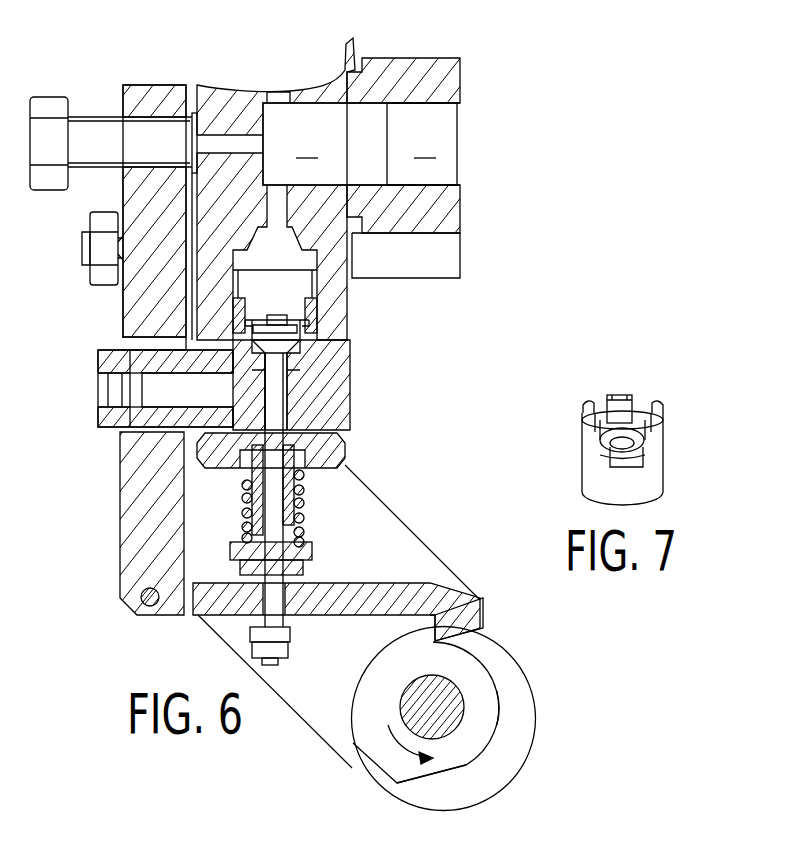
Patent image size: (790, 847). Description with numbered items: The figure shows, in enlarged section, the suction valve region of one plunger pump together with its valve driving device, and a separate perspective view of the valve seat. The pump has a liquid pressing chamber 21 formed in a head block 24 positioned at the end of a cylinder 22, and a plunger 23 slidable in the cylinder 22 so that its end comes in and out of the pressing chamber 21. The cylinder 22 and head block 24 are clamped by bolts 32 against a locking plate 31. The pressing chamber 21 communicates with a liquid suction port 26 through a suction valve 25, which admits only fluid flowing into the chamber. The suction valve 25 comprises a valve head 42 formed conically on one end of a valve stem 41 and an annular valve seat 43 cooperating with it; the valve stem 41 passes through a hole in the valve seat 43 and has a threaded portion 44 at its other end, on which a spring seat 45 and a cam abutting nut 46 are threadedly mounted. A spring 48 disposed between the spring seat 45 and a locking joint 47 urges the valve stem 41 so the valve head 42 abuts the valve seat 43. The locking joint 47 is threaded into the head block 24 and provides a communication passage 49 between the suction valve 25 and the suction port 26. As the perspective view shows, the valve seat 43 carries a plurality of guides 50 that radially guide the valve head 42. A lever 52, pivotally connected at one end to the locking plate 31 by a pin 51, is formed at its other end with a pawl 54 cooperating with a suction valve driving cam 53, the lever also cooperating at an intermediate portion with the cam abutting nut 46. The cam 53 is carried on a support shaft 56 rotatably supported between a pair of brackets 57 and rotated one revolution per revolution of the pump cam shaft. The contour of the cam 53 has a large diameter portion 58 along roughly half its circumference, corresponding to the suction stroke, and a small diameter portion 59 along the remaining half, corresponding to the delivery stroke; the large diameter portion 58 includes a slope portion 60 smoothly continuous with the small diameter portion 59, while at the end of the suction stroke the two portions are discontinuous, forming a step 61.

In FIG. 6, the liquid pressing chamber 21 is at (305, 144).
In FIG. 6, the cylinder 22 is at (420, 58).
In FIG. 6, the plunger 23 is at (422, 144).
In FIG. 6, the head block 24 is at (252, 88).
In FIG. 6, the suction valve 25 is at (296, 316).
In FIG. 6, the liquid suction port 26 is at (98, 400).
In FIG. 6, the locking plate 31 is at (157, 86).
In FIG. 6, the bolt 32 is at (82, 244).
In FIG. 6, the valve stem 41 is at (312, 362).
In FIG. 6, the valve head 42 is at (312, 346).
In FIG. 6, the valve seat 43 is at (310, 333).
In FIG. 7, the valve seat 43 is at (597, 430).
In FIG. 6, the threaded portion 44 is at (267, 622).
In FIG. 6, the spring seat 45 is at (312, 550).
In FIG. 6, the cam abutting nut 46 is at (303, 568).
In FIG. 6, the locking joint 47 is at (347, 447).
In FIG. 6, the spring 48 is at (304, 495).
In FIG. 6, the communication passage 49 is at (300, 390).
In FIG. 7, the guide 50 is at (618, 395).
In FIG. 6, the pin 51 is at (150, 607).
In FIG. 6, the lever 52 is at (430, 583).
In FIG. 6, the suction valve driving cam 53 is at (497, 727).
In FIG. 6, the pawl 54 is at (471, 728).
In FIG. 6, the support shaft 56 is at (437, 737).
In FIG. 6, the bracket 57 is at (403, 522).
In FIG. 6, the large diameter portion 58 is at (352, 745).
In FIG. 6, the small diameter portion 59 is at (495, 703).
In FIG. 6, the slope portion 60 is at (423, 781).
In FIG. 6, the step 61 is at (483, 601).